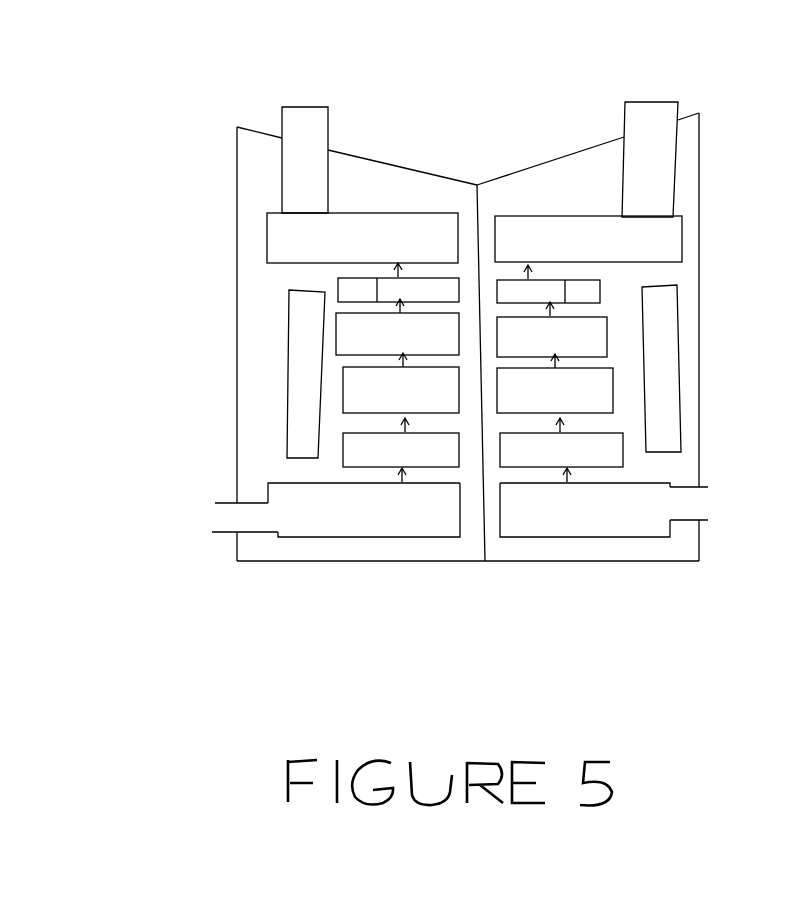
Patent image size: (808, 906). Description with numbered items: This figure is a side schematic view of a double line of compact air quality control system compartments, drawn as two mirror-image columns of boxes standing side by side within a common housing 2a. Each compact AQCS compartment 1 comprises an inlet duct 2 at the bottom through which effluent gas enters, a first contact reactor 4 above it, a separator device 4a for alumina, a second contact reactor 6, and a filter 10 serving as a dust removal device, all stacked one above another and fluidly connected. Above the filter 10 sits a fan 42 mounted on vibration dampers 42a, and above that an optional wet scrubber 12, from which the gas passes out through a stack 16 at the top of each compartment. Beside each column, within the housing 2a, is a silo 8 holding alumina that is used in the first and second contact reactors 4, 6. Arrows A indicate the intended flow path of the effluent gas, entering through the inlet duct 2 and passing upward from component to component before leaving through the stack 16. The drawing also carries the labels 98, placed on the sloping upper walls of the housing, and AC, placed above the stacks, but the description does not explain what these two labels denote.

The compact AQCS compartment 1 is at (807, 158).
The gas inlet duct 2 is at (255, 535).
The housing 2a is at (381, 562).
The first contact reactor 4 is at (337, 537).
The alumina separator device 4a is at (343, 462).
The second contact reactor 6 is at (343, 378).
The alumina silo 8 is at (283, 392).
The dust removal device 10 is at (336, 330).
The wet scrubber 12 is at (282, 223).
The stack 16 is at (282, 170).
The fan 42 is at (395, 266).
The vibration dampers 42a is at (338, 280).
The slanted wall 98 is at (367, 152).
The AC output AC is at (295, 78).
The arrows A is at (194, 520).